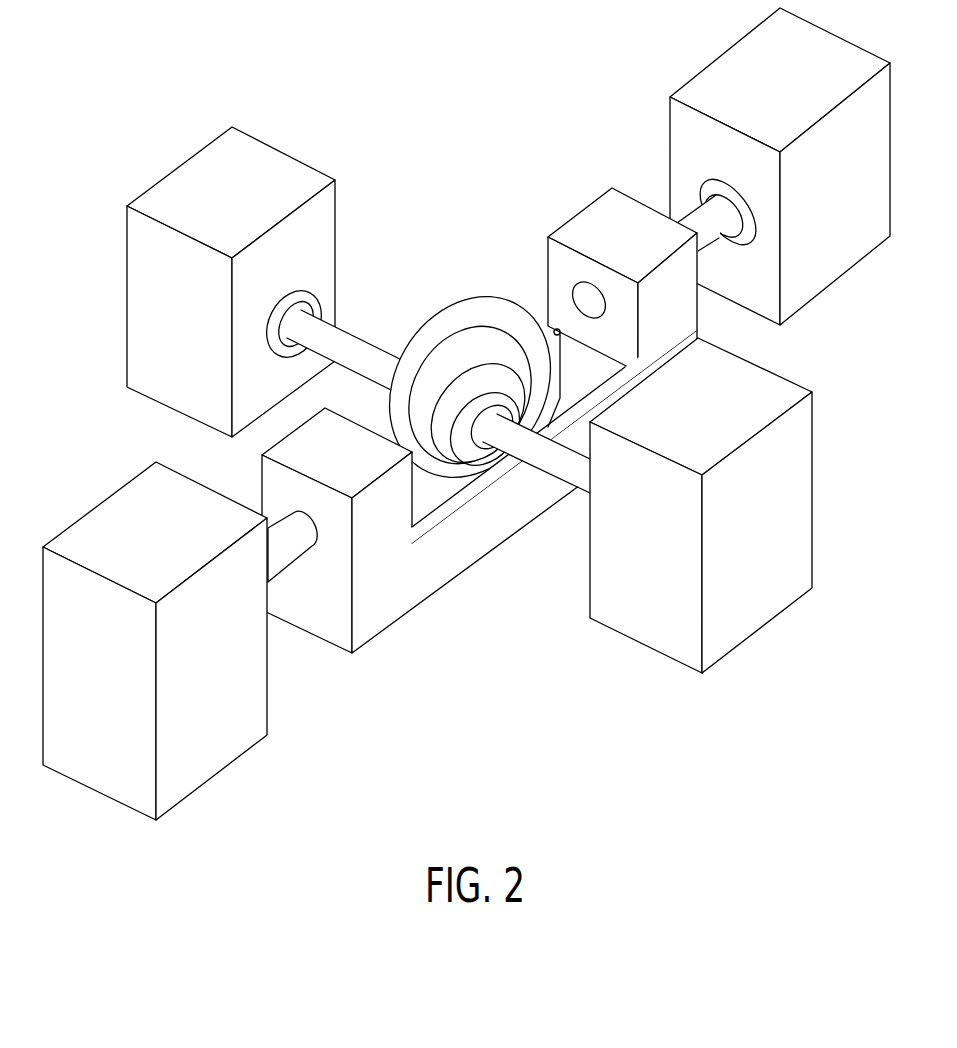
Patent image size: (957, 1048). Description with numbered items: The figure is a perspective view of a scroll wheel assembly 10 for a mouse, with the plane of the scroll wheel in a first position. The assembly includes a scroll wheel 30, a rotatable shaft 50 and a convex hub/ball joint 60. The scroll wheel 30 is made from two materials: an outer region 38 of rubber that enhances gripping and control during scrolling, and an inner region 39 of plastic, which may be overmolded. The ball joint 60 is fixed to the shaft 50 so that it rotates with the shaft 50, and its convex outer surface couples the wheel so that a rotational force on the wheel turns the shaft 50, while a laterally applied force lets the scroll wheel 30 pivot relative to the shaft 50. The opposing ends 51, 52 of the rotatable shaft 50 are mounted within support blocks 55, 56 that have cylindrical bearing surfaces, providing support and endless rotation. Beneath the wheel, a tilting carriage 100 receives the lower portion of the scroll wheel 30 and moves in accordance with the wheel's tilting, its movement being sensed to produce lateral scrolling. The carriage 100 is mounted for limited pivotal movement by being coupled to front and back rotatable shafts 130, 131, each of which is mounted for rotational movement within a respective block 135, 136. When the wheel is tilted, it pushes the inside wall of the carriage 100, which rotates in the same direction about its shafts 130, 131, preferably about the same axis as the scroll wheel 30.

The scroll wheel assembly 10 is at (439, 78).
The scroll wheel 30 is at (470, 303).
The outer region 38 is at (438, 331).
The inner region 39 is at (497, 360).
The rotatable shaft 50 is at (352, 340).
The end of rotatable shaft 51 is at (300, 309).
The end of rotatable shaft 52 is at (582, 493).
The support block 55 is at (313, 178).
The support block 56 is at (735, 627).
The convex hub/ball joint 60 is at (468, 455).
The carriage 100 is at (598, 214).
The rotatable shaft 130 is at (719, 249).
The rotatable shaft 131 is at (282, 573).
The block 135 is at (838, 262).
The block 136 is at (225, 741).